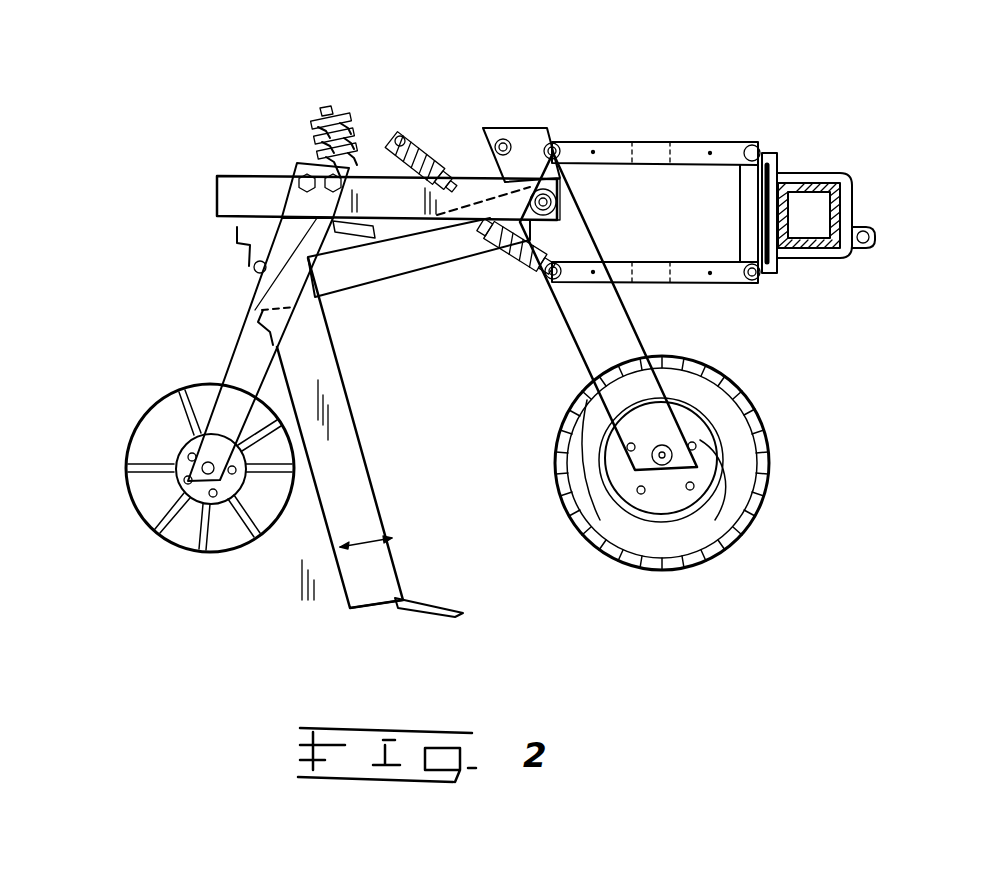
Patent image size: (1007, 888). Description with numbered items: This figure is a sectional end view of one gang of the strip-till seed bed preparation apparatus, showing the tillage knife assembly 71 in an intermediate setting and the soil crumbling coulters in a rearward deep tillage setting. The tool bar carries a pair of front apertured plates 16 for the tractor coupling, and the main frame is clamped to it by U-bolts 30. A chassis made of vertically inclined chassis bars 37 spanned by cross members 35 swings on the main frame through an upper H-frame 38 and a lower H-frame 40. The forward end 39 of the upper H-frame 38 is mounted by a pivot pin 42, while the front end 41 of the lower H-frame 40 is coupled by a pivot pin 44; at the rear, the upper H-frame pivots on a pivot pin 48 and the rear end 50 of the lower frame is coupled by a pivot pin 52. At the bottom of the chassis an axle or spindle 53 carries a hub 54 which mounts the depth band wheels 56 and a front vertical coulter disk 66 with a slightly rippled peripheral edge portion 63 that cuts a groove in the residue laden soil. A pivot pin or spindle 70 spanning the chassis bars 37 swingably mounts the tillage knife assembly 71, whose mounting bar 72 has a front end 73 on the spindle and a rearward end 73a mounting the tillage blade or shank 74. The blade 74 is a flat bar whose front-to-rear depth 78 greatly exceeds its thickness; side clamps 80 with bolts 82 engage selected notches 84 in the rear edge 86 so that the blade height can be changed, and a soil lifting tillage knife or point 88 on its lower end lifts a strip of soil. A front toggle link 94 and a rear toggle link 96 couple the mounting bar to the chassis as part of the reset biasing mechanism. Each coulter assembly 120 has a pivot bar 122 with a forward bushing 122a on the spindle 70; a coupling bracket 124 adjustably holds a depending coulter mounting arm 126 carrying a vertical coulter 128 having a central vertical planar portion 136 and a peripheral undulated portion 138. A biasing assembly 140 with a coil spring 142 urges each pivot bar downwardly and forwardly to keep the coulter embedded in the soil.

The front apertured plates 16 is at (856, 252).
The U-bolts 30 is at (858, 172).
The cross members 35 is at (650, 284).
The chassis bars 37 is at (577, 335).
The upper H-frame 38 is at (685, 140).
The forward end of upper H-frame 39 is at (745, 140).
The lower H-frame 40 is at (577, 142).
The front end of lower H-frame 41 is at (695, 284).
The pivot pin 42 is at (766, 150).
The pivot pin 44 is at (770, 275).
The pivot pin 48 is at (568, 142).
The rear end of bottom H-frame 50 is at (560, 300).
The pivot pin 52 is at (520, 268).
The axle or spindle 53 is at (660, 470).
The hub 54 is at (742, 530).
The depth band wheels 56 is at (760, 482).
The rippled peripheral edge portion 63 is at (768, 432).
The front vertical coulter disk 66 is at (770, 387).
The pivot pin or spindle 70 is at (570, 205).
The tillage knife assembly 71 is at (142, 313).
The mounting bar 72 is at (392, 245).
The front end of mounting bar 73 is at (572, 222).
The rearward end of mounting bar 73a is at (336, 288).
The tillage blade or shank 74 is at (360, 485).
The front-to-rear depth of tillage blade 78 is at (365, 540).
The side clamps 80 is at (252, 268).
The bolts 82 is at (256, 298).
The notches or slots 84 is at (244, 233).
The rear edge of tillage blade 86 is at (332, 540).
The tillage knife or point 88 is at (458, 610).
The front toggle link 94 is at (545, 125).
The rear toggle link 96 is at (378, 168).
The soil crumbling and pulverizing coulter assembly 120 is at (127, 417).
The pivot bar 122 is at (248, 192).
The forward bushing 122a is at (583, 140).
The coupling bracket 124 is at (297, 198).
The coulter mounting arm 126 is at (240, 345).
The vertical coulter 128 is at (213, 588).
The central vertical planar portion 136 is at (133, 495).
The peripheral undulated portion 138 is at (160, 545).
The biasing assembly 140 is at (402, 127).
The coil spring 142 is at (430, 150).